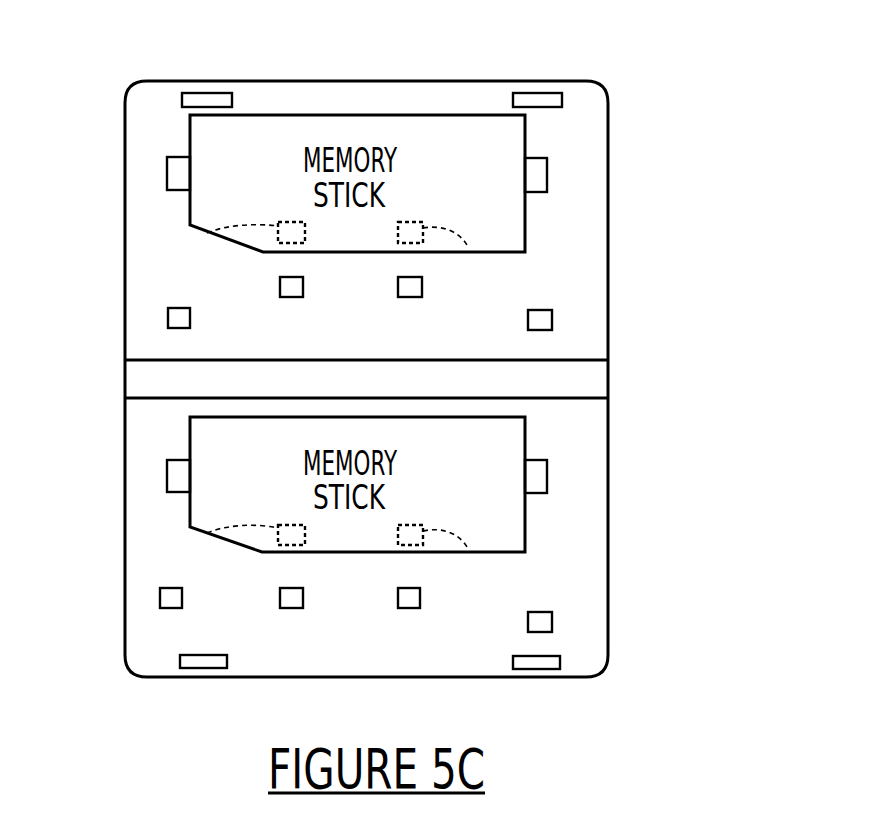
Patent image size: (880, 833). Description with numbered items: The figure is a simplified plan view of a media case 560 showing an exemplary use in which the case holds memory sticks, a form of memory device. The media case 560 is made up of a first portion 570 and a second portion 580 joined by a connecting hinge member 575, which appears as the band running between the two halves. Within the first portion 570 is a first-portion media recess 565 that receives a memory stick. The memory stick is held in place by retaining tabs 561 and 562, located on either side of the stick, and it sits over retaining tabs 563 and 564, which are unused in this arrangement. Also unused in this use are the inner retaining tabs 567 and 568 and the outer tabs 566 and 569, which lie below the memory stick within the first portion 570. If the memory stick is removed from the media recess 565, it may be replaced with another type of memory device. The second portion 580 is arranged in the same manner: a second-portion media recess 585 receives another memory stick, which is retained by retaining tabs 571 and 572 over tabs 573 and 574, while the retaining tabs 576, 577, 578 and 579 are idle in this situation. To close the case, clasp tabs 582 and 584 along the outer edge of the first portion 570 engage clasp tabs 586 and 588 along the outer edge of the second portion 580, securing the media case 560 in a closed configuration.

The media case 560 is at (440, 338).
The retaining tab 561 is at (598, 154).
The retaining tab 562 is at (126, 170).
The retaining tab 563 is at (447, 265).
The retaining tab 564 is at (238, 254).
The first-portion media recess 565 is at (373, 304).
The outer tab 566 is at (606, 322).
The inner retaining tab 567 is at (435, 312).
The inner retaining tab 568 is at (266, 312).
The outer tab 569 is at (115, 320).
The first portion 570 is at (413, 230).
The retaining tab 571 is at (603, 478).
The retaining tab 572 is at (126, 472).
The tab 573 is at (447, 567).
The tab 574 is at (238, 556).
The connecting hinge member 575 is at (427, 376).
The retaining tab 576 is at (435, 623).
The retaining tab 577 is at (266, 623).
The retaining tab 578 is at (605, 628).
The retaining tab 579 is at (111, 602).
The second portion 580 is at (415, 528).
The clasp tab 582 is at (185, 67).
The clasp tab 584 is at (560, 67).
The second-portion media recess 585 is at (361, 655).
The clasp tab 586 is at (185, 688).
The clasp tab 588 is at (555, 689).